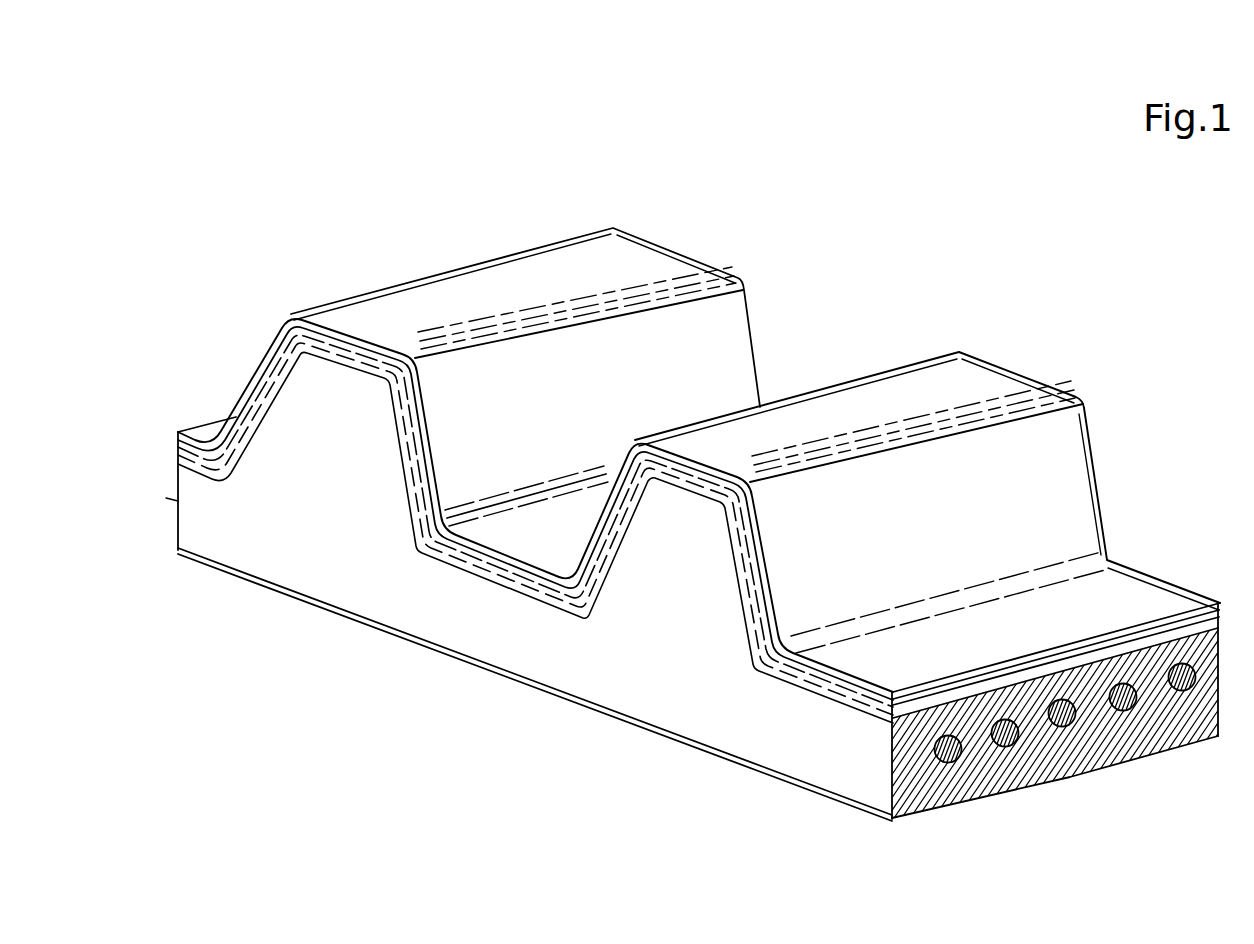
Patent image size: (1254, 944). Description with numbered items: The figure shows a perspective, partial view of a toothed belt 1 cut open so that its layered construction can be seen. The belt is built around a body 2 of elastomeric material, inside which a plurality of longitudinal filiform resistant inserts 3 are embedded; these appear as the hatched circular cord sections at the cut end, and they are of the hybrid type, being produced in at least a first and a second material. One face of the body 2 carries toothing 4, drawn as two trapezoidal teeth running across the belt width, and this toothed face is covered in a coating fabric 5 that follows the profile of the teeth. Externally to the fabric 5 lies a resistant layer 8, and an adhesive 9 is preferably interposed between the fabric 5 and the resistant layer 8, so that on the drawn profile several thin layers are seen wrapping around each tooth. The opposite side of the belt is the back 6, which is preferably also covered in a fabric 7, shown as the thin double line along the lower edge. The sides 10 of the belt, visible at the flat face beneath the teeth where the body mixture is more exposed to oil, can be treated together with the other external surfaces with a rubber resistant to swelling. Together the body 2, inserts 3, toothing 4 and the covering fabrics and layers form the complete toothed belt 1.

The toothed belt 1 is at (290, 143).
The body 2 is at (233, 517).
The longitudinal filiform resistant inserts 3 is at (1183, 690).
The toothing 4 is at (667, 525).
The coating fabric 5 is at (633, 467).
The back 6 is at (432, 650).
The fabric 7 is at (327, 604).
The resistant layer 8 is at (763, 500).
The adhesive 9 is at (710, 473).
The sides 10 is at (752, 718).